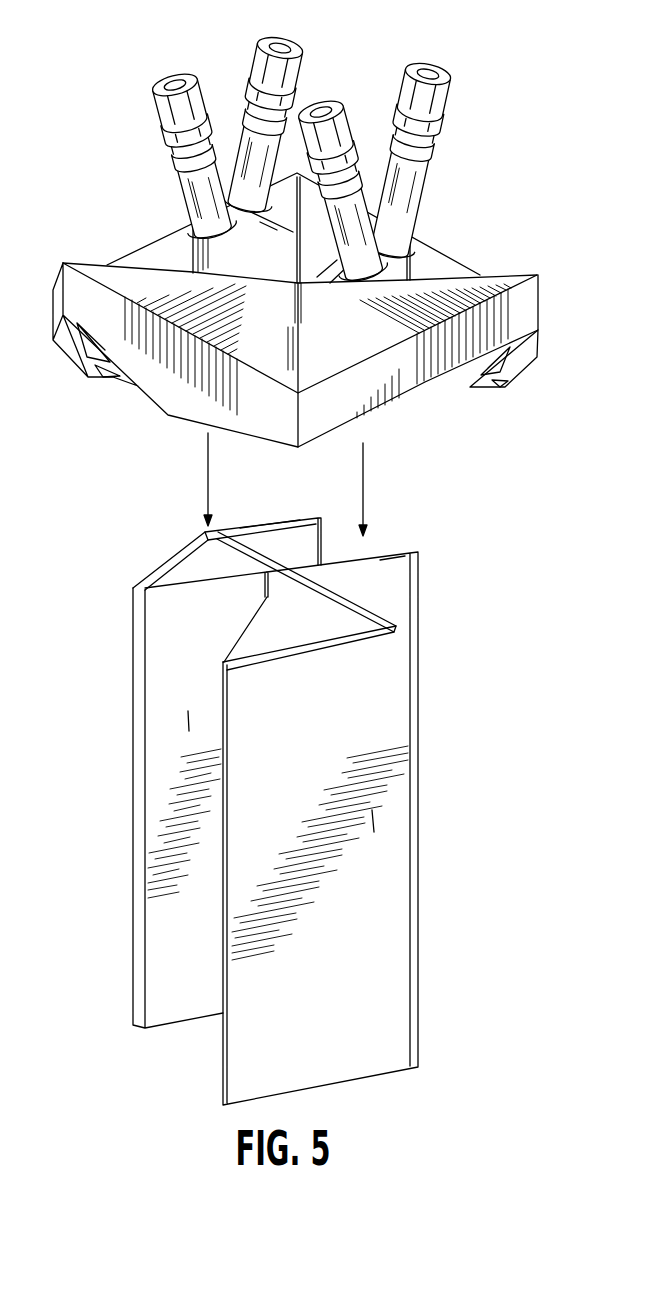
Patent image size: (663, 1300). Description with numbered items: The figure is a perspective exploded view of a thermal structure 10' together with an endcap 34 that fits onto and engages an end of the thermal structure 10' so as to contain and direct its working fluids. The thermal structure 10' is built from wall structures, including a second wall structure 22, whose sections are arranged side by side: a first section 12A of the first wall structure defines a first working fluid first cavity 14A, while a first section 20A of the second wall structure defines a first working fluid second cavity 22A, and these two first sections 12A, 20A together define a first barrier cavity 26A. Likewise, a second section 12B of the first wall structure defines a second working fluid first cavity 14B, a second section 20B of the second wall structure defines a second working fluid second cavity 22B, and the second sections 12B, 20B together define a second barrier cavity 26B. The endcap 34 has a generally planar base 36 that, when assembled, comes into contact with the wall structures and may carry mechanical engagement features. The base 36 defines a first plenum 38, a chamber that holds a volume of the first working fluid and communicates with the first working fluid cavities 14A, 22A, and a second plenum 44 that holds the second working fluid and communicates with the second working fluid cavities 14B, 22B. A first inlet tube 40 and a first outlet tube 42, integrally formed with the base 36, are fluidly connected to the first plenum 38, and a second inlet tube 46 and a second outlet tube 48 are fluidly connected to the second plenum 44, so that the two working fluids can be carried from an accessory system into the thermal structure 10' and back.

The thermal structure 10' is at (263, 784).
The first section of the first wall structure 12A is at (207, 746).
The second section of the first wall structure 12B is at (361, 791).
The first working fluid first cavity 14A is at (278, 540).
The second working fluid first cavity 14B is at (398, 577).
The first section of the second wall structure 20A is at (188, 722).
The second section of the second wall structure 20B is at (378, 822).
The second wall structure 22 is at (281, 784).
The first working fluid second cavity 22A is at (205, 562).
The second working fluid second cavity 22B is at (325, 625).
The first barrier cavity 26A is at (204, 531).
The second barrier cavity 26B is at (400, 628).
The endcap 34 is at (446, 249).
The base 36 is at (498, 282).
The first plenum 38 is at (197, 240).
The first inlet tube 40 is at (243, 143).
The first outlet tube 42 is at (192, 190).
The second plenum 44 is at (347, 280).
The second inlet tube 46 is at (428, 183).
The second outlet tube 48 is at (373, 187).